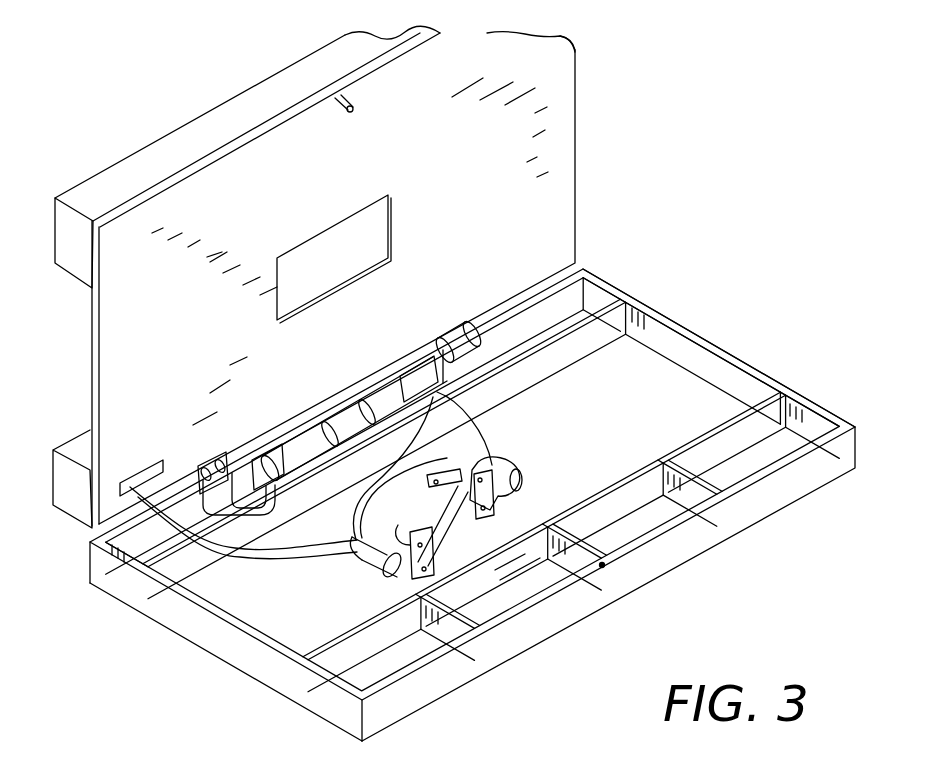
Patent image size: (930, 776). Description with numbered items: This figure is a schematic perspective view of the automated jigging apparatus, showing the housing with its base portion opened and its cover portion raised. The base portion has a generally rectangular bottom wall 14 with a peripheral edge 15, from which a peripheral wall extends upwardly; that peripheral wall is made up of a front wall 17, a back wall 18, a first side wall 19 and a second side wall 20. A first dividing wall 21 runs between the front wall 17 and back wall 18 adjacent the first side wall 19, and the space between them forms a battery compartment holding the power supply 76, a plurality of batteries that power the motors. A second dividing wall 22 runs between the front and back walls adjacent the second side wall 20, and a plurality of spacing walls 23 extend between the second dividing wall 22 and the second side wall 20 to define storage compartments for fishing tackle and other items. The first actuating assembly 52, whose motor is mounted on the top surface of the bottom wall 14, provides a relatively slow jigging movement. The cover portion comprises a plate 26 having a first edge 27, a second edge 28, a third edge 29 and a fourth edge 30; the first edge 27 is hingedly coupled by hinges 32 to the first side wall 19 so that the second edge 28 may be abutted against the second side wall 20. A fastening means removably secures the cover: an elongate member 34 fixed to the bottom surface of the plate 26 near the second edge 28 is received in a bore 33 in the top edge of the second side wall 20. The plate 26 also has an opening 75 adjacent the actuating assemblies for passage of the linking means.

The bottom wall 14 is at (683, 405).
The peripheral edge 15 is at (392, 726).
The front wall 17 is at (690, 332).
The back wall 18 is at (255, 660).
The first side wall 19 is at (113, 558).
The second side wall 20 is at (790, 490).
The first dividing wall 21 is at (610, 320).
The second dividing wall 22 is at (350, 657).
The spacing walls 23 is at (505, 618).
The plate 26 is at (565, 133).
The first edge 27 is at (233, 447).
The second edge 28 is at (147, 187).
The third edge 29 is at (577, 52).
The fourth edge 30 is at (88, 297).
The hinges 32 is at (470, 318).
The bore 33 is at (603, 568).
The elongate member 34 is at (338, 98).
The first actuating assembly 52 is at (330, 608).
The opening 75 is at (310, 262).
The power supply 76 is at (290, 442).